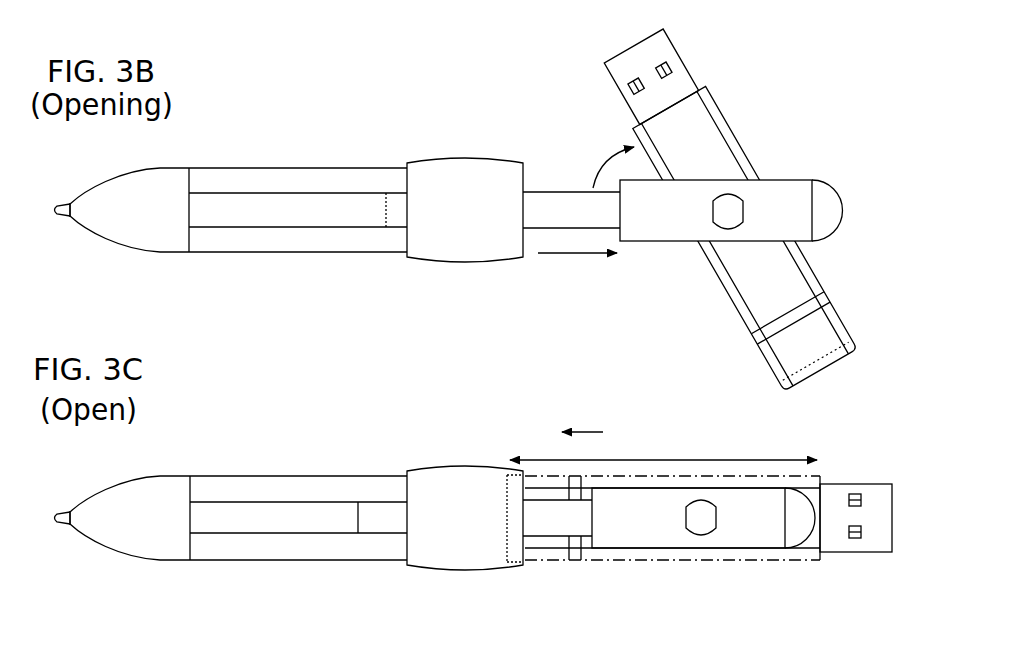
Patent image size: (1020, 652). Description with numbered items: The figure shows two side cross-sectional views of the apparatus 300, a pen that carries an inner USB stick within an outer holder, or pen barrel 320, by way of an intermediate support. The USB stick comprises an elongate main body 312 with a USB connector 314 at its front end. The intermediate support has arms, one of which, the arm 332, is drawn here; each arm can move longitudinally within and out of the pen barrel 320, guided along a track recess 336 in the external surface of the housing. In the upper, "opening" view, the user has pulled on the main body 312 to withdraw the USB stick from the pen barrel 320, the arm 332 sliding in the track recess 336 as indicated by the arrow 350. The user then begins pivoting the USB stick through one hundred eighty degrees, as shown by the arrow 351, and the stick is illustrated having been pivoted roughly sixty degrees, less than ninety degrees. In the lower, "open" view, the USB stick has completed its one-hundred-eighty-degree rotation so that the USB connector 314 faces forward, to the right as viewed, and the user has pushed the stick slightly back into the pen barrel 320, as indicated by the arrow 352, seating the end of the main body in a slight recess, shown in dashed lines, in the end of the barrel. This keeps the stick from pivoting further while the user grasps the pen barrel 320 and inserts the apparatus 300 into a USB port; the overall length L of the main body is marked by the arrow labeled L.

In FIG. 3B, the apparatus 300 is at (257, 90).
In FIG. 3C, the apparatus 300 is at (237, 421).
In FIG. 3B, the outer holder 320 is at (298, 134).
In FIG. 3C, the outer holder 320 is at (268, 438).
In FIG. 3B, the track recess 336 is at (262, 207).
In FIG. 3C, the track recess 336 is at (263, 510).
In FIG. 3B, the arm 332 is at (398, 203).
In FIG. 3C, the arm 332 is at (383, 508).
In FIG. 3B, the main body 312 is at (723, 117).
In FIG. 3B, the USB connector 314 is at (653, 32).
In FIG. 3C, the USB connector 314 is at (847, 481).
In FIG. 3B, the arrow 350 is at (590, 262).
In FIG. 3B, the arrow 351 is at (611, 153).
In FIG. 3C, the arrow 352 is at (588, 432).